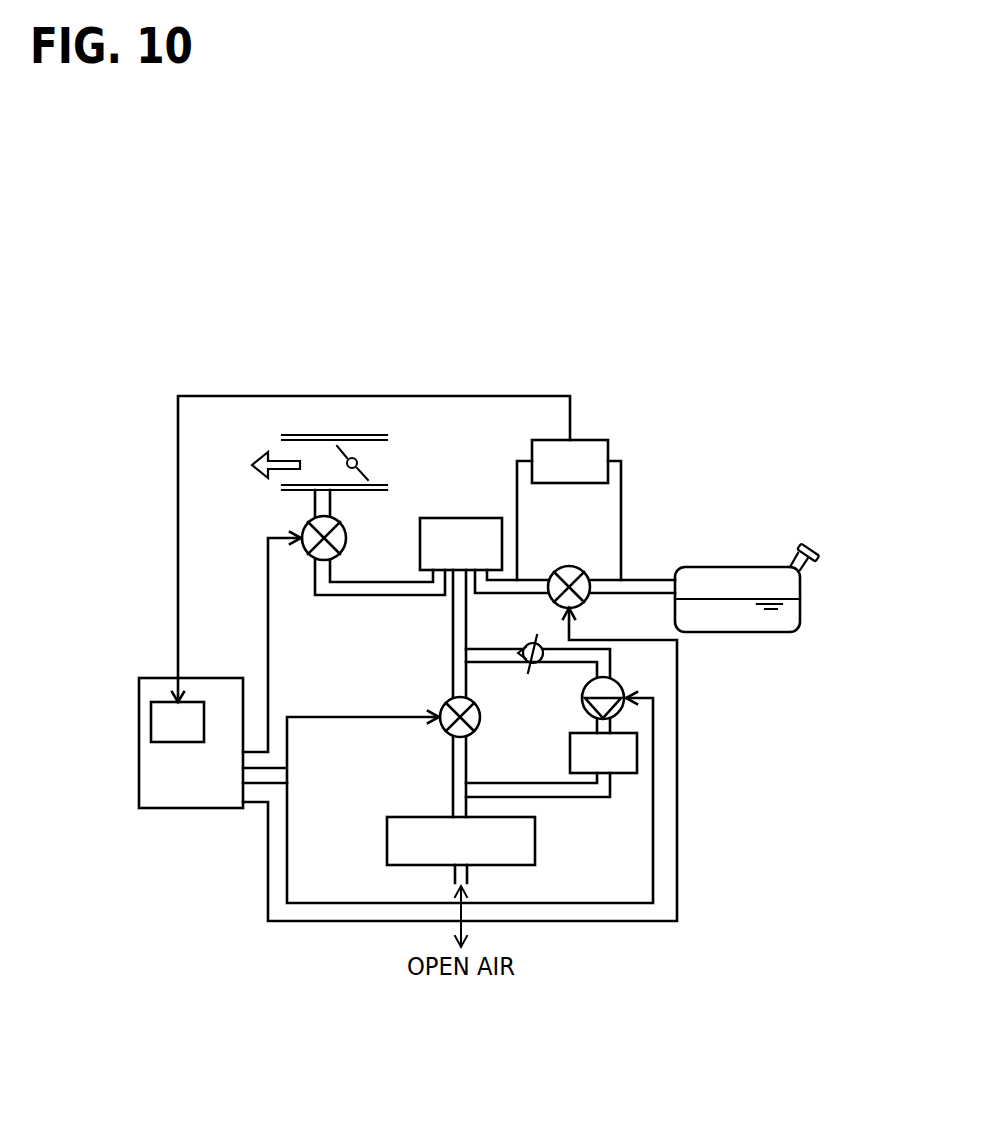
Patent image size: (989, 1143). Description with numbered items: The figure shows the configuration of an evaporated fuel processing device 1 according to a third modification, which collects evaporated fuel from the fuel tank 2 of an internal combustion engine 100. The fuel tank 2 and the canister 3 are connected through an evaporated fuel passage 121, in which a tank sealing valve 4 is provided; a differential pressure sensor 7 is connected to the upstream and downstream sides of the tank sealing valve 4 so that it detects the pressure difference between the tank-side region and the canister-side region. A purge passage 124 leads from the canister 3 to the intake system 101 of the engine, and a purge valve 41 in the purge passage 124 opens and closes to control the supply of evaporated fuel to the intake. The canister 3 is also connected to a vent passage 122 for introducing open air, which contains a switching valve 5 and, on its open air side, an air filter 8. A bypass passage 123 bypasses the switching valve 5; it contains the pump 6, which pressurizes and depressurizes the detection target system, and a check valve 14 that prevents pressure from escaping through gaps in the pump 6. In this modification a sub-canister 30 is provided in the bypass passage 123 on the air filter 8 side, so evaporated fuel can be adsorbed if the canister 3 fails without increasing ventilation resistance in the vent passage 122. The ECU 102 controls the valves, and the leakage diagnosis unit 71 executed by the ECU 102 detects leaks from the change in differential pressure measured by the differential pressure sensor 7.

The evaporated fuel processing device 1 is at (640, 363).
The fuel tank 2 is at (798, 617).
The canister 3 is at (455, 525).
The tank sealing valve 4 is at (567, 567).
The switching valve 5 is at (440, 728).
The pump 6 is at (583, 686).
The differential pressure sensor 7 is at (588, 446).
The air filter 8 is at (388, 838).
The check valve 14 is at (541, 663).
The sub-canister 30 is at (630, 746).
The purge valve 41 is at (302, 548).
The leakage diagnosis unit 71 is at (157, 720).
The internal combustion engine 100 is at (235, 447).
The intake system 101 is at (330, 432).
The ECU 102 is at (173, 783).
The evaporated fuel passage 121 is at (641, 583).
The vent passage 122 is at (458, 772).
The bypass passage 123 is at (545, 792).
The purge passage 124 is at (375, 593).